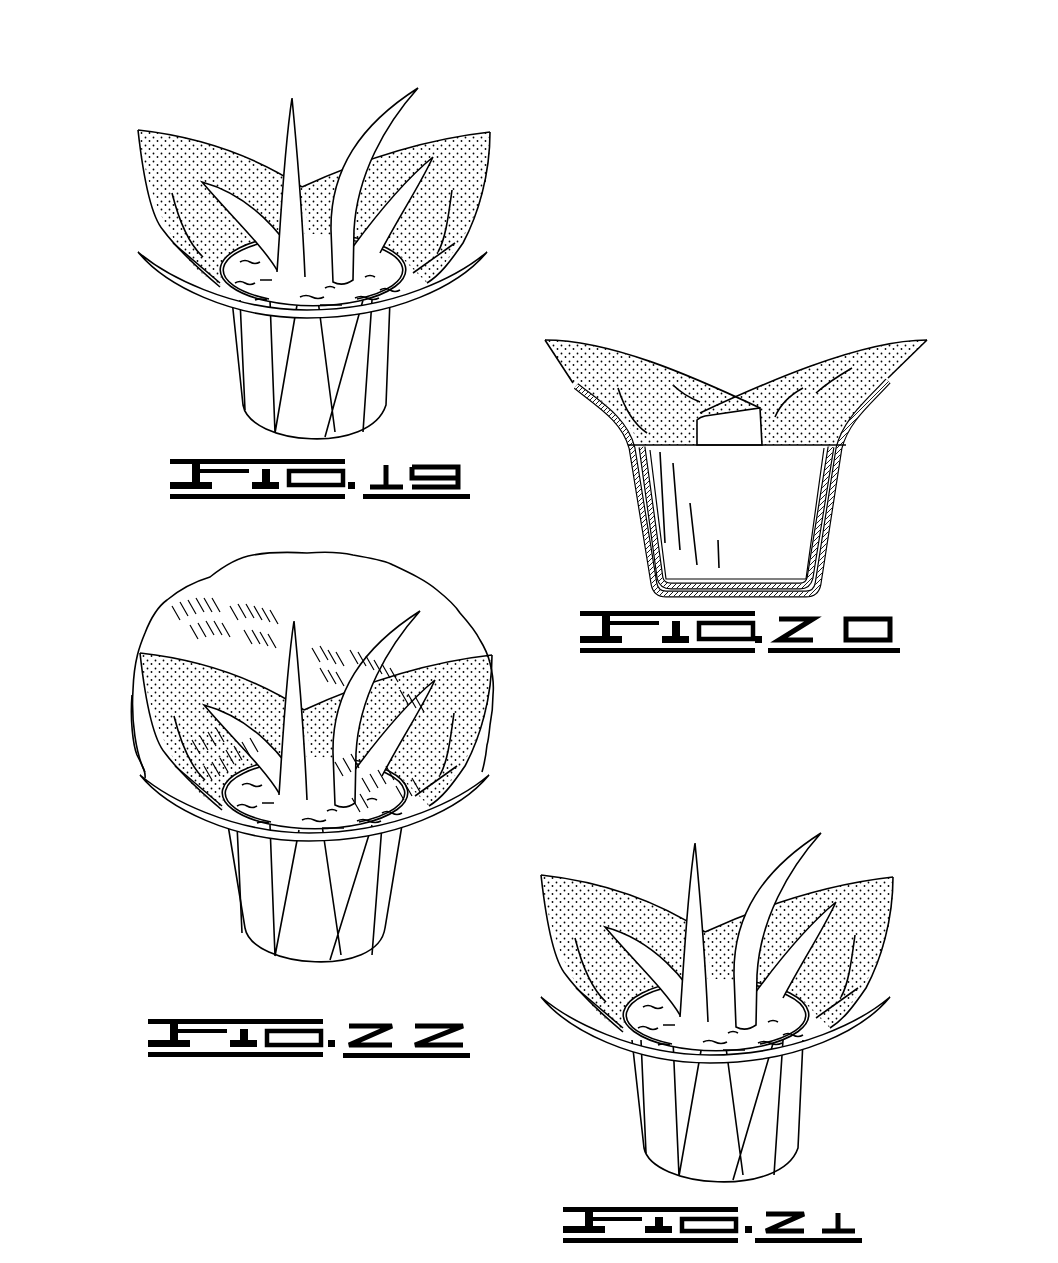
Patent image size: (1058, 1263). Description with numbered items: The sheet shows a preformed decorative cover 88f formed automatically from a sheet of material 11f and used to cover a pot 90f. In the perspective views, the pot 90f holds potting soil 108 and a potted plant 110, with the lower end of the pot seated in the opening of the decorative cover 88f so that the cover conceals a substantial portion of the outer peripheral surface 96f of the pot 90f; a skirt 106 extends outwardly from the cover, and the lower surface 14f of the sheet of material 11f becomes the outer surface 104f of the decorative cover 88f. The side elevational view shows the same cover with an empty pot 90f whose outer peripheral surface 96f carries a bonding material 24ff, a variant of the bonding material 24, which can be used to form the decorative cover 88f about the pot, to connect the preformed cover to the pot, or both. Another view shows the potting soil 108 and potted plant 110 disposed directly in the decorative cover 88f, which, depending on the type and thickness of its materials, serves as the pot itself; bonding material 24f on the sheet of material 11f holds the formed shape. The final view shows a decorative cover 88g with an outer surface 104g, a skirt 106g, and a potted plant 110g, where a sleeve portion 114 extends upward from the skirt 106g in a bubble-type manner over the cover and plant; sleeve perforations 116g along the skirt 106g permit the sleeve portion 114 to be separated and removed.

In FIG. 19, the decorative cover 88f is at (183, 98).
In FIG. 20, the decorative cover 88f is at (830, 366).
In FIG. 21, the decorative cover 88f is at (634, 855).
In FIG. 19, the sheet of material 11f is at (132, 153).
In FIG. 20, the sheet of material 11f is at (637, 473).
In FIG. 21, the sheet of material 11f is at (859, 872).
In FIG. 19, the pot 90f is at (403, 243).
In FIG. 20, the pot 90f is at (813, 438).
In FIG. 19, the potting soil 108 is at (410, 283).
In FIG. 21, the potting soil 108 is at (792, 1023).
In FIG. 19, the potted plant 110 is at (292, 263).
In FIG. 21, the potted plant 110 is at (696, 1003).
In FIG. 20, the bonding material 24 is at (849, 466).
In FIG. 20, the bonding material 24ff is at (833, 527).
In FIG. 20, the lower surface 14f is at (823, 570).
In FIG. 20, the outer peripheral surface 96f is at (651, 552).
In FIG. 21, the skirt 106 is at (560, 897).
In FIG. 21, the bonding material 24f is at (630, 943).
In FIG. 21, the outer surface 104f is at (782, 1090).
In FIG. 22, the decorative cover 88g is at (297, 967).
In FIG. 22, the outer surface 104g is at (392, 855).
In FIG. 22, the sleeve perforations 116g is at (170, 653).
In FIG. 22, the potted plant 110g is at (297, 781).
In FIG. 22, the sleeve portion 114 is at (503, 697).
In FIG. 22, the skirt 106g is at (150, 780).